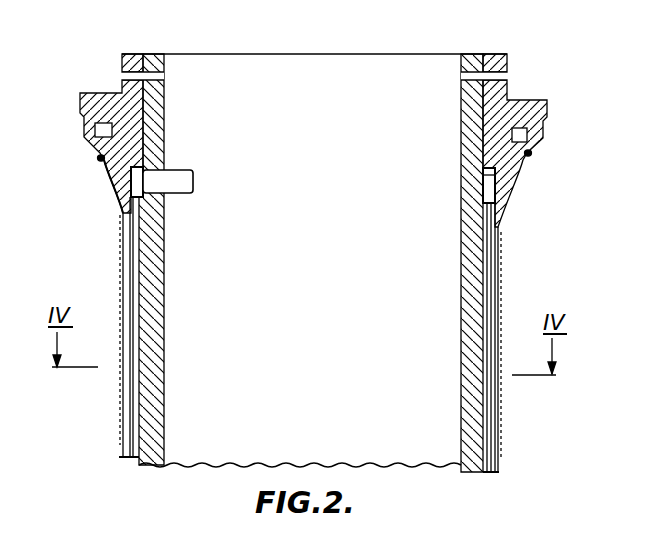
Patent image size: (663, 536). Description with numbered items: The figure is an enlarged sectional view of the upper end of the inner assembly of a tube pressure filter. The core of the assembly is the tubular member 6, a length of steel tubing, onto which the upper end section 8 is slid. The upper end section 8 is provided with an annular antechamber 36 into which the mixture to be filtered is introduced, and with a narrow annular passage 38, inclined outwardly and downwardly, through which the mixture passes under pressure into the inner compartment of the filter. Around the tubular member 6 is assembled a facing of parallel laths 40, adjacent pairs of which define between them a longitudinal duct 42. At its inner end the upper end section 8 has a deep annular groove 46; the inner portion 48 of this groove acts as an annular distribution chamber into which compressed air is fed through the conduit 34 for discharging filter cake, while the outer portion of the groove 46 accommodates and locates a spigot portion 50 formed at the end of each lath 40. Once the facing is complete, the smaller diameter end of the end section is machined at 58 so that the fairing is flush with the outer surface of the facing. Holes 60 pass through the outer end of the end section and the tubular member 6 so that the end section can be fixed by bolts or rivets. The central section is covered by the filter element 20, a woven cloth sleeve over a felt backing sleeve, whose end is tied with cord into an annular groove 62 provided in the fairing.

The tubular member 6 is at (468, 478).
The upper end section 8 is at (546, 101).
The filter element 20 is at (507, 276).
The conduit 34 is at (198, 182).
The annular antechamber 36 is at (521, 134).
The narrow annular passage 38 is at (531, 152).
The lath 40 is at (497, 437).
The longitudinal duct 42 is at (489, 223).
The deep annular groove 46 is at (486, 188).
The inner portion of groove 48 is at (487, 176).
The spigot portion 50 is at (497, 217).
The machined fairing 58 is at (121, 210).
The holes 60 is at (500, 79).
The annular groove 62 is at (100, 159).